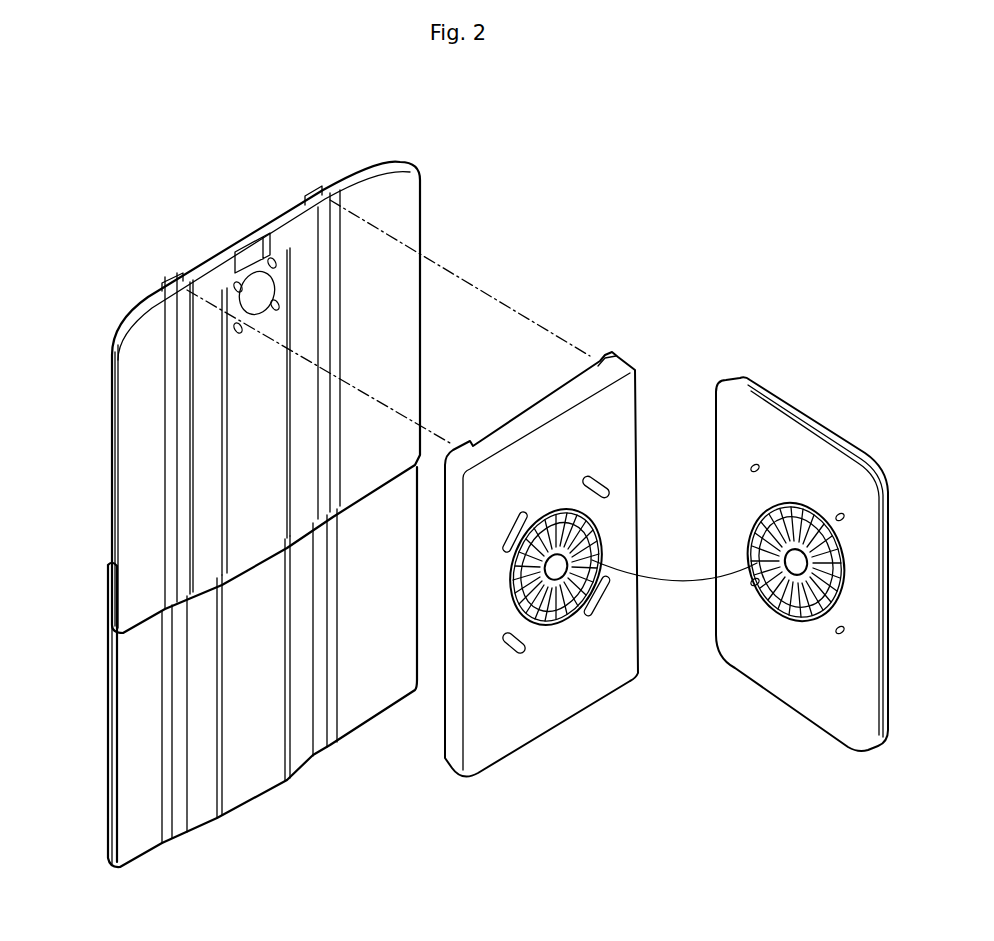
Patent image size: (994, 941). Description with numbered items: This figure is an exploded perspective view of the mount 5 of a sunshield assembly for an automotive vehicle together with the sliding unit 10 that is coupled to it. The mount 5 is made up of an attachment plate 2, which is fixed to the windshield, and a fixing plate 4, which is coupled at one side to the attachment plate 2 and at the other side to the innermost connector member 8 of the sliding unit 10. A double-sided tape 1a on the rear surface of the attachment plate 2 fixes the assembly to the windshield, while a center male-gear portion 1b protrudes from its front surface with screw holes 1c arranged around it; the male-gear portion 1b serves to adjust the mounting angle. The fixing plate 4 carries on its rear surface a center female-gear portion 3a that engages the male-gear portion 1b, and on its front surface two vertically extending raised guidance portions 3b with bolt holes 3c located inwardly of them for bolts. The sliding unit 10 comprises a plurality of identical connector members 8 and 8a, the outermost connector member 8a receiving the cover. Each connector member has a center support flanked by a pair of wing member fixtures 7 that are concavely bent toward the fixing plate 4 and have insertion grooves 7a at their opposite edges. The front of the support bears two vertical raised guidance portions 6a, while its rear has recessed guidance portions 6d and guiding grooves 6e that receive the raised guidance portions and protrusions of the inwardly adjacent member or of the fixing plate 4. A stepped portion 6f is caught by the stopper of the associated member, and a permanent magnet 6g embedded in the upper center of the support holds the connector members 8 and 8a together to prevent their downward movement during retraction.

The double-sided tape 1a is at (820, 410).
The center male-gear portion 1b is at (800, 617).
The screw holes 1c is at (847, 518).
The attachment plate 2 is at (747, 387).
The center female-gear portion 3a is at (558, 608).
The raised guidance portions 3b is at (603, 358).
The bolt holes 3c is at (520, 655).
The fixing plate 4 is at (635, 373).
The mount 5 is at (747, 327).
The raised guidance portions 6a is at (183, 277).
The recessed guidance portions 6d is at (320, 232).
The guiding grooves 6e is at (223, 500).
The stepped portion 6f is at (262, 247).
The permanent magnet 6g is at (257, 282).
The wing member fixtures 7 is at (143, 330).
The insertion grooves 7a is at (117, 410).
The connector member 8 is at (377, 192).
The connector member 8a is at (127, 700).
The sliding unit 10 is at (100, 607).